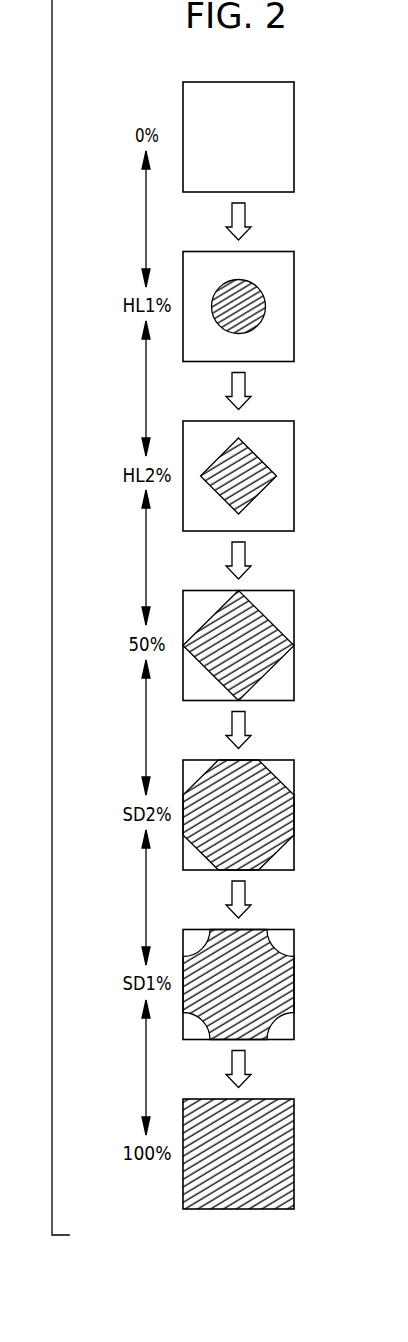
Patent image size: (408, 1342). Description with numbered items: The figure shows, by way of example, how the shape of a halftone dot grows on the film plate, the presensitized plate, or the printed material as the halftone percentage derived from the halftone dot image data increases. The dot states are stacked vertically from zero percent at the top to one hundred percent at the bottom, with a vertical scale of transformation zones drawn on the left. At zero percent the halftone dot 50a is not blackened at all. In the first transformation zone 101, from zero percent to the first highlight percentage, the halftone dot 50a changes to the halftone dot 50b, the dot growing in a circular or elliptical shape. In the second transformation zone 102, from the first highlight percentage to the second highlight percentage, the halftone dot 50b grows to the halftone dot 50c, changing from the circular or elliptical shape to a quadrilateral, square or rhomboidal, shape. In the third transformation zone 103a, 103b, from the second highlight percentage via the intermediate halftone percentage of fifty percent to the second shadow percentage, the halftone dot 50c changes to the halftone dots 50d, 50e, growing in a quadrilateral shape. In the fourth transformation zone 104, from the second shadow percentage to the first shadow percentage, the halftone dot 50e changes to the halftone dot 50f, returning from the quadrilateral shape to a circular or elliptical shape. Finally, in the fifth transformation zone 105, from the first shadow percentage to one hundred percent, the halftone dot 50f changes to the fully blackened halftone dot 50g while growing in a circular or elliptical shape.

The halftone dot 50a is at (272, 81).
The halftone dot 50b is at (272, 250).
The halftone dot 50c is at (272, 420).
The halftone dot 50d is at (272, 590).
The halftone dot 50e is at (272, 759).
The halftone dot 50f is at (272, 928).
The halftone dot 50g is at (272, 1098).
The first transformation zone 101 is at (146, 224).
The second transformation zone 102 is at (146, 394).
The third transformation zone 103a is at (146, 564).
The third transformation zone 103b is at (146, 733).
The fourth transformation zone 104 is at (146, 903).
The fifth transformation zone 105 is at (146, 1072).